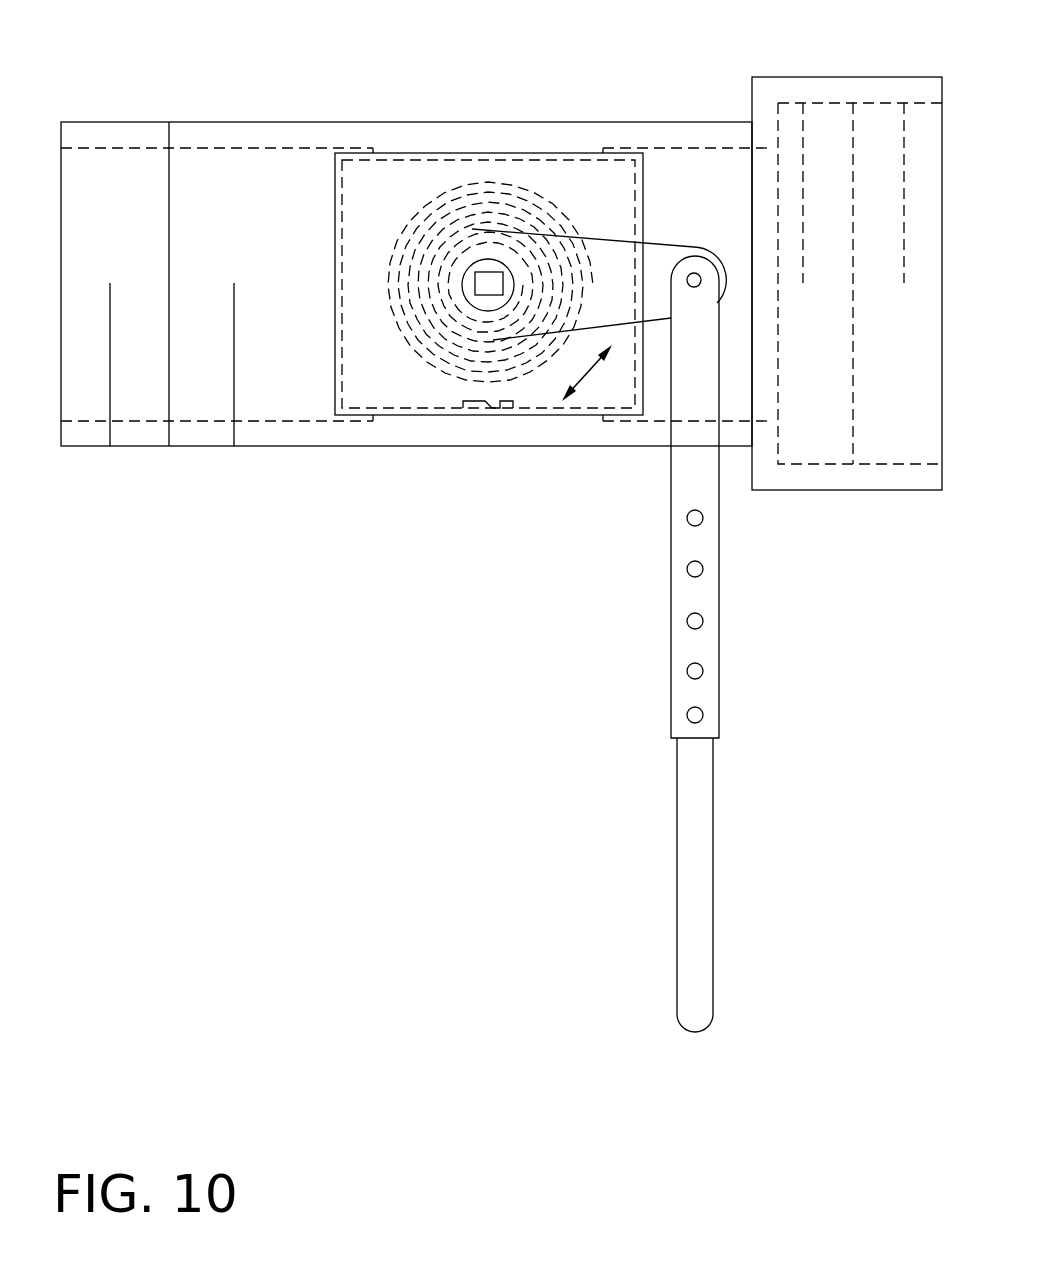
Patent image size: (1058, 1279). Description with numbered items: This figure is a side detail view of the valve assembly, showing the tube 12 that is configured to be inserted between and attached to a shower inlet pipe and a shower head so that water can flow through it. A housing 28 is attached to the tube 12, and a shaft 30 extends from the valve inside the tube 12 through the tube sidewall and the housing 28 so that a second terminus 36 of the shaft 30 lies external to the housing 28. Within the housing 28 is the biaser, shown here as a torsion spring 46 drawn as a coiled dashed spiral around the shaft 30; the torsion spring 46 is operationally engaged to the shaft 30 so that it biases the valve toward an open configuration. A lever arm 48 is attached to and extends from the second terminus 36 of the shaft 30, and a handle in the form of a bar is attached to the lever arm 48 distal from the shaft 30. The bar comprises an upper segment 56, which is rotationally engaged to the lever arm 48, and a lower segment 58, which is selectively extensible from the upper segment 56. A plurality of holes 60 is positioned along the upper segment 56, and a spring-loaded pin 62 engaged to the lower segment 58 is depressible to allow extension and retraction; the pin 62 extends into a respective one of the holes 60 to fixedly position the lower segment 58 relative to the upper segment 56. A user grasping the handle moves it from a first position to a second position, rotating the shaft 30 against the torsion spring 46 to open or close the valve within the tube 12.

The tube 12 is at (294, 106).
The housing 28 is at (662, 182).
The shaft 30 is at (493, 258).
The second terminus 36 is at (474, 302).
The torsion spring 46 is at (540, 181).
The lever arm 48 is at (593, 301).
The upper segment 56 is at (737, 538).
The lower segment 58 is at (731, 808).
The holes 60 is at (675, 658).
The pin 62 is at (722, 715).